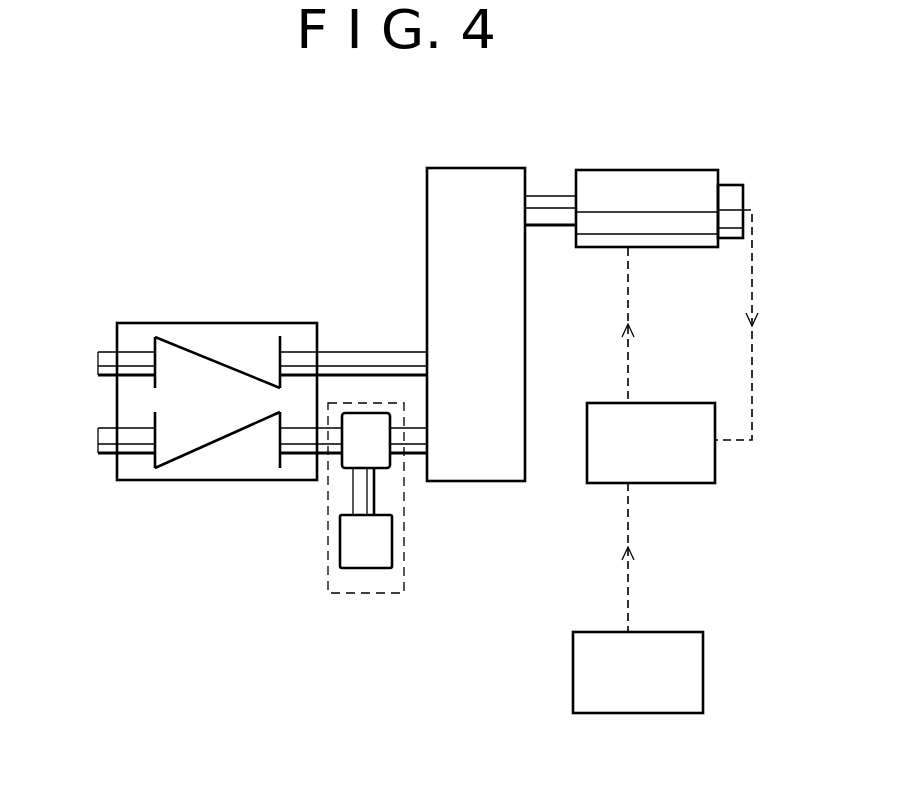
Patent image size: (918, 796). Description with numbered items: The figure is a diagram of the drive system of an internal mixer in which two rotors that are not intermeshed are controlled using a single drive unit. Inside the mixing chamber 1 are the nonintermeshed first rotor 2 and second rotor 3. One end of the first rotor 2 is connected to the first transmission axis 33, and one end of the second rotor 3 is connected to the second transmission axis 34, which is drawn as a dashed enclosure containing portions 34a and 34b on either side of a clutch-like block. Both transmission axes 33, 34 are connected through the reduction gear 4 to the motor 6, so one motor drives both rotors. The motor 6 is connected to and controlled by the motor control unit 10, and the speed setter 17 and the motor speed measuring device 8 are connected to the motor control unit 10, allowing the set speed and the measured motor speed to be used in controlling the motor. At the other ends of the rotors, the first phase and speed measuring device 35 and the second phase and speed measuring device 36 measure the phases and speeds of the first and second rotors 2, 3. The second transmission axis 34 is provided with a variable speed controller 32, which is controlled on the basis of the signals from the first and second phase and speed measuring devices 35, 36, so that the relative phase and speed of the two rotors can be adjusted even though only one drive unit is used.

The mixing chamber 1 is at (190, 323).
The first rotor 2 is at (235, 366).
The second rotor 3 is at (227, 437).
The reduction gear 4 is at (477, 168).
The motor 6 is at (648, 170).
The motor speed measuring device 8 is at (733, 185).
The motor control unit 10 is at (695, 403).
The speed setter 17 is at (688, 632).
The variable speed controller 32 is at (352, 402).
The first transmission axis 33 is at (396, 352).
The second transmission axis 34 is at (457, 643).
The clutch shaft portion 34a is at (413, 447).
The clutch shaft portion 34b is at (325, 447).
The first phase and speed measuring device 35 is at (98, 358).
The second phase and speed measuring device 36 is at (98, 440).